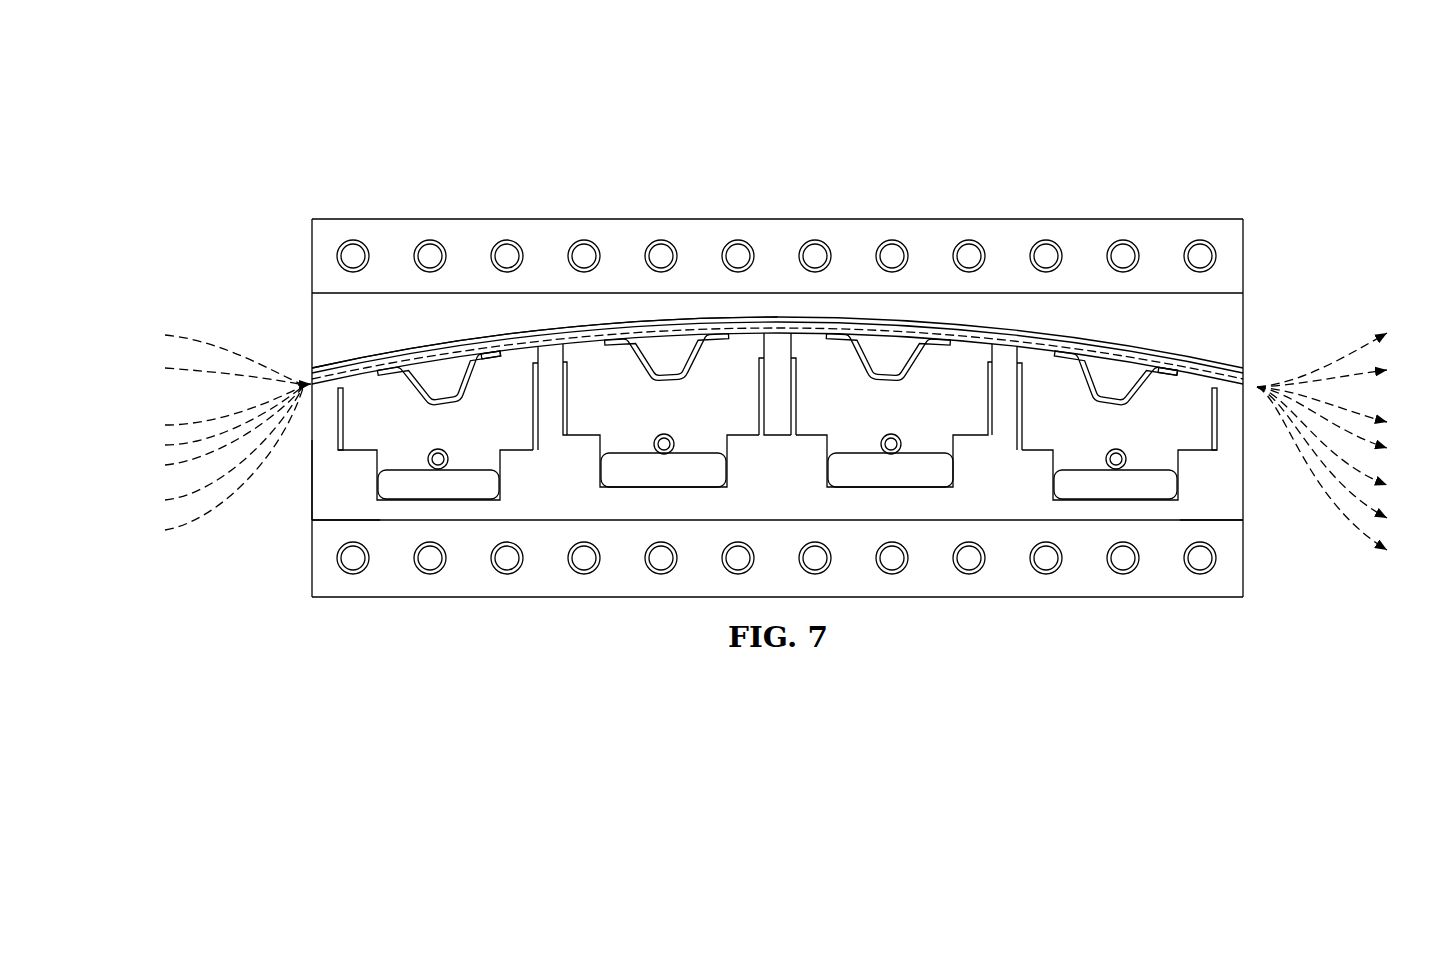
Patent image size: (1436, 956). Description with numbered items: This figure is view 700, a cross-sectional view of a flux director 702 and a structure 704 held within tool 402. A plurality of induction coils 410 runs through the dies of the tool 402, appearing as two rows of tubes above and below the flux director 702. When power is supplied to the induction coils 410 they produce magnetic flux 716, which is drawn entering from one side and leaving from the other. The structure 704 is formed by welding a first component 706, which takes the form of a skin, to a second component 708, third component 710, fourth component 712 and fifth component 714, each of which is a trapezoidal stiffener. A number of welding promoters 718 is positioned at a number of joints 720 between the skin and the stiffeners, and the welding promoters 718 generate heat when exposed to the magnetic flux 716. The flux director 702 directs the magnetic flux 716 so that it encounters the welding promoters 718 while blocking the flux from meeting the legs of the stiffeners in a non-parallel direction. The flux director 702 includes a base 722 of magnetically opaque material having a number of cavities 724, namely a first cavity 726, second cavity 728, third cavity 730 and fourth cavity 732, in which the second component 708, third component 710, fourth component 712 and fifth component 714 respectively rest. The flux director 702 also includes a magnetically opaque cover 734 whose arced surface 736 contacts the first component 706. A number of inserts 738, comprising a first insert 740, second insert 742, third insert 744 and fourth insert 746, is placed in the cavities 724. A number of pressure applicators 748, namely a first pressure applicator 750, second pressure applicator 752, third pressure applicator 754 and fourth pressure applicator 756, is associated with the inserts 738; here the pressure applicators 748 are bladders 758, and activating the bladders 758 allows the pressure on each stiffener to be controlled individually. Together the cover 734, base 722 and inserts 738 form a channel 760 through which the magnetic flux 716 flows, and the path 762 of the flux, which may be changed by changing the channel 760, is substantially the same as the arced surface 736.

The view 700 is at (347, 142).
The tool 402 is at (1127, 191).
The plurality of induction coils 410 is at (507, 238).
The flux director 702 is at (300, 302).
The structure 704 is at (1172, 362).
The first component 706 is at (1227, 363).
The second component 708 is at (431, 405).
The third component 710 is at (645, 383).
The fourth component 712 is at (908, 381).
The fifth component 714 is at (1133, 401).
The magnetic flux 716 is at (232, 301).
The number of welding promoters 718 is at (330, 390).
The number of joints 720 is at (1161, 377).
The base 722 is at (312, 466).
The number of cavities 724 is at (338, 502).
The first cavity 726 is at (391, 455).
The second cavity 728 is at (620, 434).
The third cavity 730 is at (937, 435).
The fourth cavity 732 is at (1167, 457).
The cover 734 is at (714, 317).
The arced surface 736 is at (377, 354).
The number of inserts 738 is at (1226, 455).
The first insert 740 is at (521, 448).
The second insert 742 is at (746, 433).
The third insert 744 is at (809, 433).
The fourth insert 746 is at (1035, 448).
The number of pressure applicators 748 is at (1226, 500).
The first pressure applicator 750 is at (504, 485).
The second pressure applicator 752 is at (729, 472).
The third pressure applicator 754 is at (823, 468).
The fourth pressure applicator 756 is at (1051, 484).
The bladders 758 is at (362, 508).
The channel 760 is at (838, 321).
The path 762 is at (496, 343).